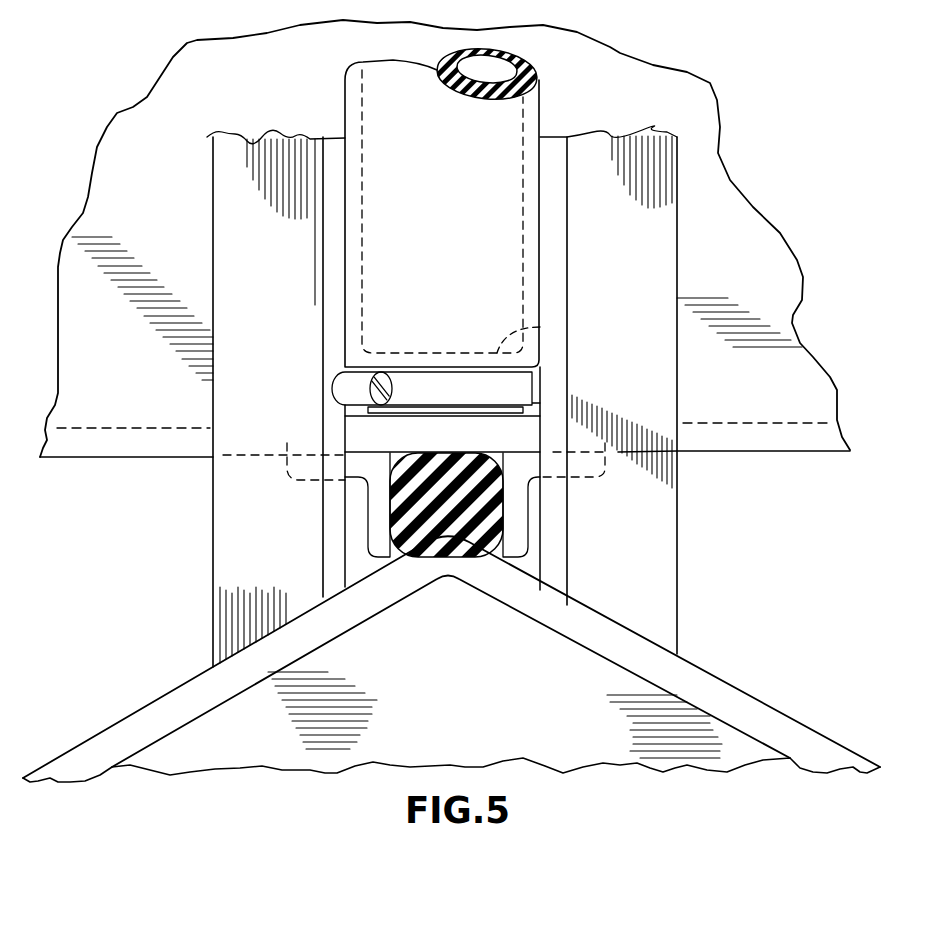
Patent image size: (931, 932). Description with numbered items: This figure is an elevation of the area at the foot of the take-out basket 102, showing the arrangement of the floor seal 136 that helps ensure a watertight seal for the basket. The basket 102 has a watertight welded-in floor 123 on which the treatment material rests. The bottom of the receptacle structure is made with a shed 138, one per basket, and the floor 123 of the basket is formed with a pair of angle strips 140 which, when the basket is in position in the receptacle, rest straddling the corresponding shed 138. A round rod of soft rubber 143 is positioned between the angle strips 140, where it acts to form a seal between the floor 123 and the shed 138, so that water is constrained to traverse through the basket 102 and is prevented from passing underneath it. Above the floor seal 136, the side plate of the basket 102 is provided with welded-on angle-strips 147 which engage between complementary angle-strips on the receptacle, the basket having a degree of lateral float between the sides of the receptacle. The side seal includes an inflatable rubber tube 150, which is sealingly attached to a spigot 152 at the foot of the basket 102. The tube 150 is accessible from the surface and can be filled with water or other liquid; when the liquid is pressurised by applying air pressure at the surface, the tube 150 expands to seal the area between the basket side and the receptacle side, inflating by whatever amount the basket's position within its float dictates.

The basket 102 is at (738, 408).
The floor 123 is at (105, 443).
The floor-seal 136 is at (378, 506).
The shed 138 is at (472, 578).
The angle strips 140 is at (520, 530).
The round rod of soft rubber 143 is at (417, 520).
The welded-on angle-strips 147 is at (657, 267).
The inflatable rubber tube 150 is at (538, 108).
The spigot 152 is at (540, 327).